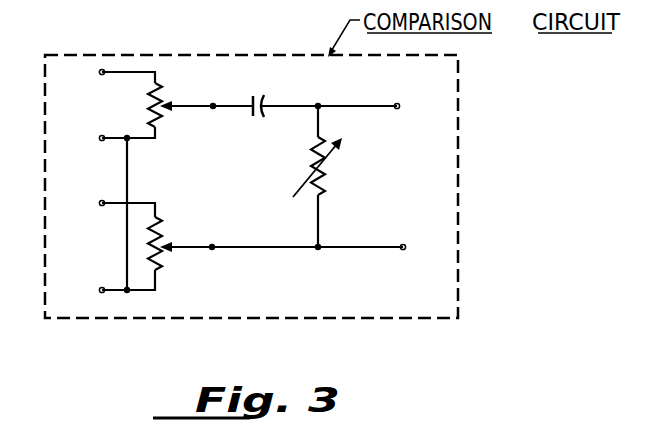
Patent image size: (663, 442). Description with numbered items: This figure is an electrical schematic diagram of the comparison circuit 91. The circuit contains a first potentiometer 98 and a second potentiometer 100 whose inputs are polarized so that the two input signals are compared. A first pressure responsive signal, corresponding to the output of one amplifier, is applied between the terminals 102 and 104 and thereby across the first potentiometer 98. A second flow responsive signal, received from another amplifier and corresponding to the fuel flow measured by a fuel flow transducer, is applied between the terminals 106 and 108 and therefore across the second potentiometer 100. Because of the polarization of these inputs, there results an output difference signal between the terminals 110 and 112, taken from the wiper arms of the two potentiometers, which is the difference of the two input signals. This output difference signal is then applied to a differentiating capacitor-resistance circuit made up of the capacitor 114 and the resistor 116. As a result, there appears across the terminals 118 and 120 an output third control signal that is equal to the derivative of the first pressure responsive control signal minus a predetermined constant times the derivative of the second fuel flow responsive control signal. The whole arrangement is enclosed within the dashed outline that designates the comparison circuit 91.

The comparison circuit 91 is at (458, 152).
The first potentiometer 98 is at (158, 100).
The second potentiometer 100 is at (157, 227).
The terminal 102 is at (99, 73).
The terminal 104 is at (99, 138).
The terminal 106 is at (99, 202).
The terminal 108 is at (99, 290).
The terminal 110 is at (213, 110).
The terminal 112 is at (212, 251).
The capacitor 114 is at (270, 101).
The resistor 116 is at (323, 178).
The terminal 118 is at (400, 104).
The terminal 120 is at (404, 243).